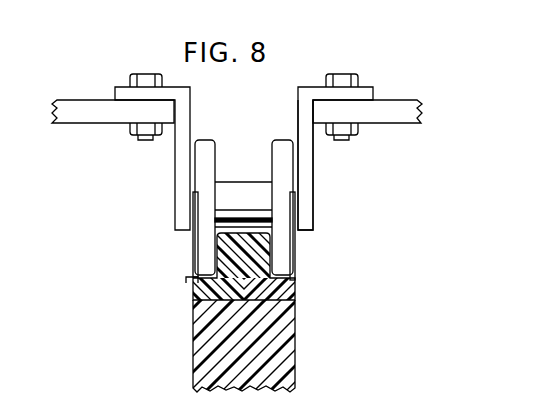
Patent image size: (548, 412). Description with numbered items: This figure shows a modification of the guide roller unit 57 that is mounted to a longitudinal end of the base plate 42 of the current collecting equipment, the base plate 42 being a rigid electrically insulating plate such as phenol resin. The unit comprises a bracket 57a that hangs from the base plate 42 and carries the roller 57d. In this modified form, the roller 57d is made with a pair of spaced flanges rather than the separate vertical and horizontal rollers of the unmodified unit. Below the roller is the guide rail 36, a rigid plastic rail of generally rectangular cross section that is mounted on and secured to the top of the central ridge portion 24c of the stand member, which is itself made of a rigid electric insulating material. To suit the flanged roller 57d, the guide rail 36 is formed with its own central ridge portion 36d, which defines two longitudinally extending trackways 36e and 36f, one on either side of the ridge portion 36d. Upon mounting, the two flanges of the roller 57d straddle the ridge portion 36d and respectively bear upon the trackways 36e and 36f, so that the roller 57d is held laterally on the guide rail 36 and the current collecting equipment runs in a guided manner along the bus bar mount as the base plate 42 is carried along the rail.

The base plate 42 is at (400, 100).
The guide roller unit 57 is at (450, 61).
The bracket 57a is at (313, 175).
The roller 57d is at (216, 210).
The guide rail 36 is at (193, 299).
The central ridge portion 36d is at (193, 261).
The trackway 36e is at (296, 265).
The trackway 36f is at (196, 275).
The central ridge portion 24c is at (288, 330).